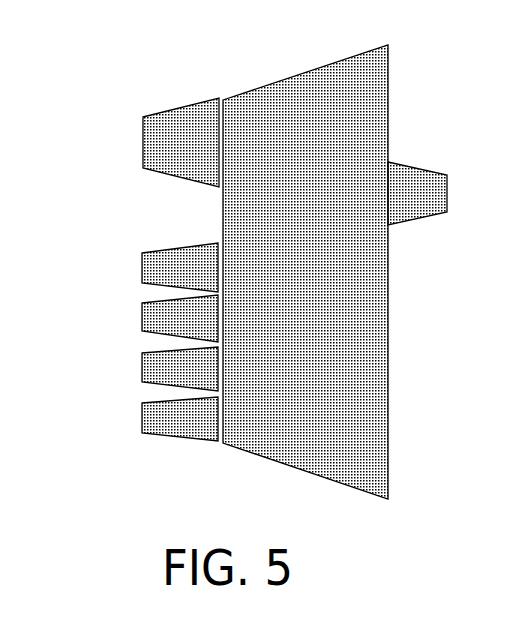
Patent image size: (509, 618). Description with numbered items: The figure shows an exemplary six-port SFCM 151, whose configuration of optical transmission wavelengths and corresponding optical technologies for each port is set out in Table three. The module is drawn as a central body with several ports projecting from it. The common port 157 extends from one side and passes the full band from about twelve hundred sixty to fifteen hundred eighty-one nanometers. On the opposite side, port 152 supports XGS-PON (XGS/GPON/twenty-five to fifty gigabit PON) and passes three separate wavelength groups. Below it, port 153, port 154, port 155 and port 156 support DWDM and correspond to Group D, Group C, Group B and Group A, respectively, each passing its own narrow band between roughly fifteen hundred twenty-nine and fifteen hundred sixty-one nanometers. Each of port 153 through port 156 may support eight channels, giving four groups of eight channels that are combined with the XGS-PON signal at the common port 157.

The SFCM 151 is at (338, 63).
The port 152 is at (175, 128).
The port 153 is at (141, 260).
The port 154 is at (141, 318).
The port 155 is at (142, 382).
The port 156 is at (142, 435).
The port 157 is at (405, 165).